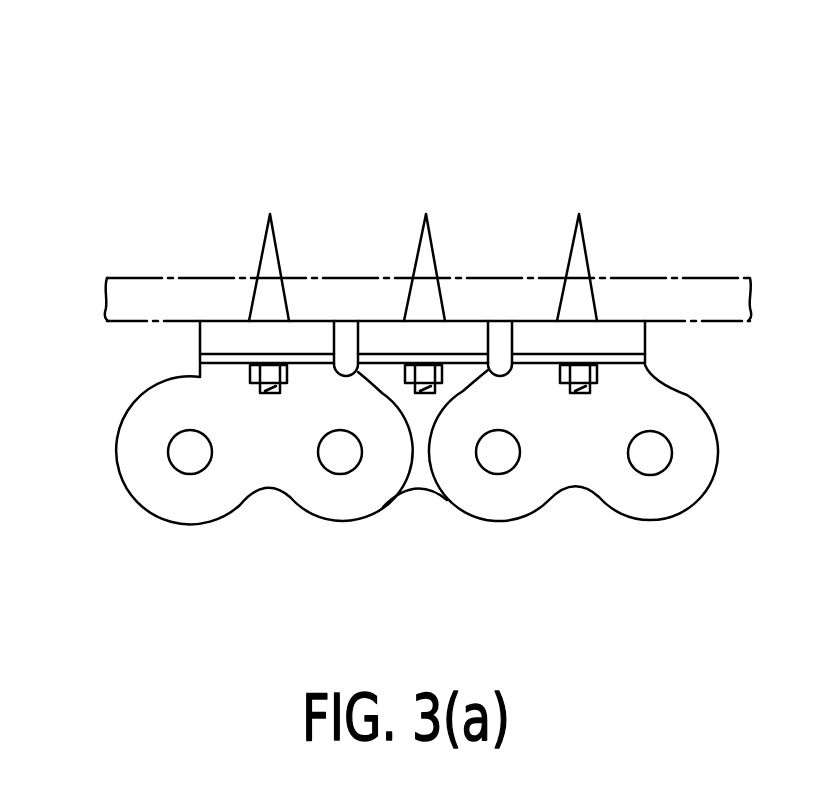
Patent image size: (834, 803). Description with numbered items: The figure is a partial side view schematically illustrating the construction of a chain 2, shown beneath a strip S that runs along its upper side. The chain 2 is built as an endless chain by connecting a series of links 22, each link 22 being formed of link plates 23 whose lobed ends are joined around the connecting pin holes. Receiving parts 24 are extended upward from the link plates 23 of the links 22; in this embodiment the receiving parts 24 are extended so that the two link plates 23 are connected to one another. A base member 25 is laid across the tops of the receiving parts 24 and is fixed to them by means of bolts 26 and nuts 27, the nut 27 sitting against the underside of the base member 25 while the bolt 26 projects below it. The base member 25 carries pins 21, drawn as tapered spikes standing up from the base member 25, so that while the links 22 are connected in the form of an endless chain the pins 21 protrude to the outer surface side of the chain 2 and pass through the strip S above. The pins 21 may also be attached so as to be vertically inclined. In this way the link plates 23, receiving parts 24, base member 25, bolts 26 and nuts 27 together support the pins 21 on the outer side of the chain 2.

The chain 2 is at (272, 60).
The sheet S is at (163, 278).
The pin 21 is at (272, 238).
The link 22 is at (167, 519).
The link plate 23 is at (140, 476).
The receiving part 24 is at (475, 362).
The base member 25 is at (227, 335).
The bolt 26 is at (265, 394).
The nut 27 is at (250, 367).